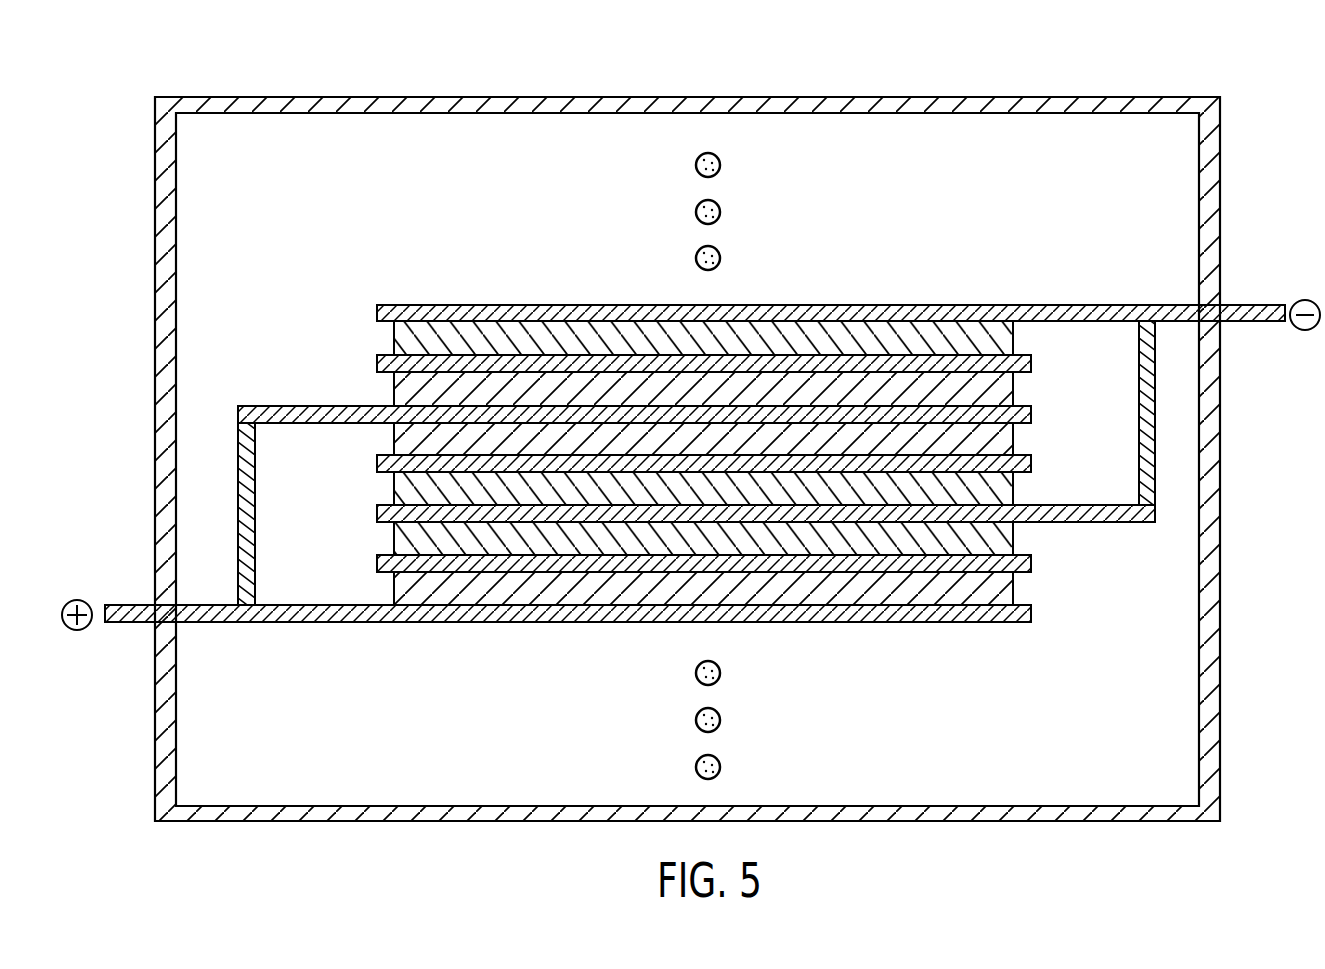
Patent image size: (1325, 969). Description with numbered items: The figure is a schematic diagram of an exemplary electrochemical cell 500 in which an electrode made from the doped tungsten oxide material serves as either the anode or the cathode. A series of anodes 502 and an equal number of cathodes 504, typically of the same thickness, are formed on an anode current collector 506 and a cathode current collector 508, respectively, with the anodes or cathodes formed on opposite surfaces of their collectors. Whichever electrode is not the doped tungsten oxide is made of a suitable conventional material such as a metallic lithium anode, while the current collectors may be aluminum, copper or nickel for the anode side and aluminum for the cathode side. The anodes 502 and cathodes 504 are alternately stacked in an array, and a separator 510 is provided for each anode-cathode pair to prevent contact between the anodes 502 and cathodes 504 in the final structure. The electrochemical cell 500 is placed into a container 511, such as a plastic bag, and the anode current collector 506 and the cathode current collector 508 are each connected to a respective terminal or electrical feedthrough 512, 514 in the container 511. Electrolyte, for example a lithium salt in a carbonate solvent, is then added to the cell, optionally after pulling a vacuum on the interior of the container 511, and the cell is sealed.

The electrochemical cell 500 is at (687, 70).
The container 511 is at (988, 97).
The anode 502 is at (394, 338).
The cathode 504 is at (394, 392).
The anode current collector 506 is at (915, 305).
The cathode current collector 508 is at (915, 623).
The separator 510 is at (1031, 365).
The terminal or electrical feedthrough 512 is at (1250, 305).
The terminal or electrical feedthrough 514 is at (118, 623).